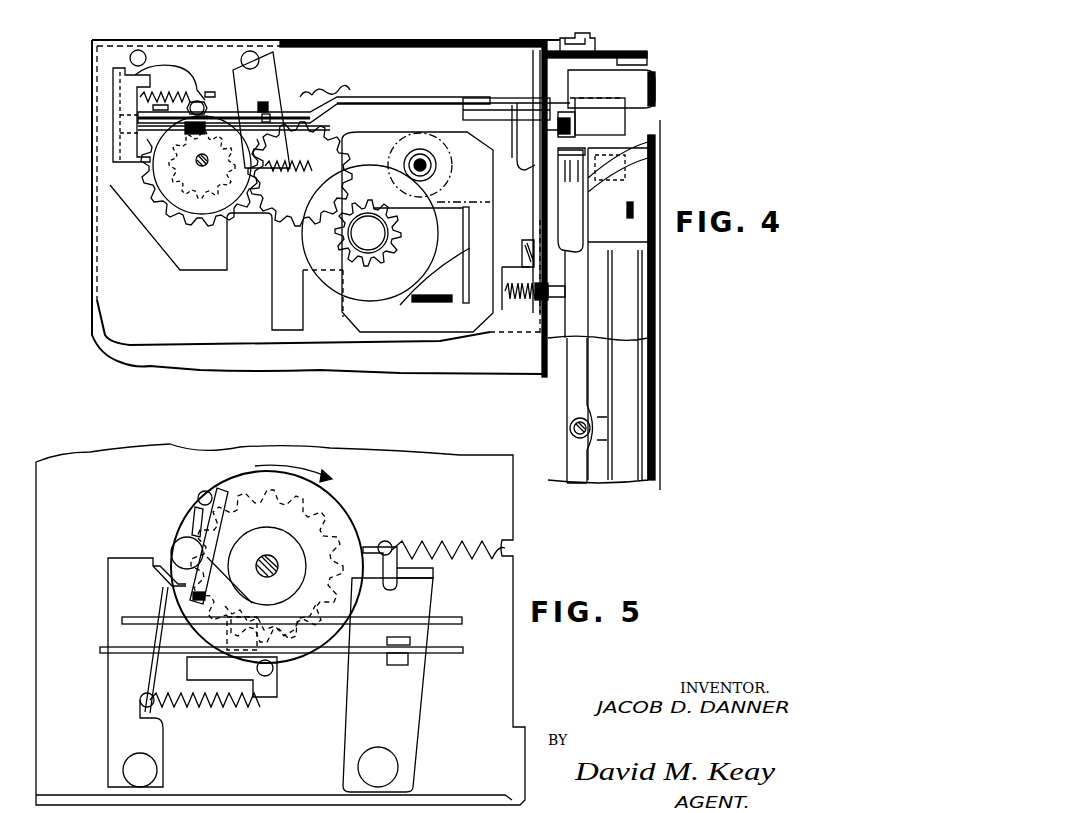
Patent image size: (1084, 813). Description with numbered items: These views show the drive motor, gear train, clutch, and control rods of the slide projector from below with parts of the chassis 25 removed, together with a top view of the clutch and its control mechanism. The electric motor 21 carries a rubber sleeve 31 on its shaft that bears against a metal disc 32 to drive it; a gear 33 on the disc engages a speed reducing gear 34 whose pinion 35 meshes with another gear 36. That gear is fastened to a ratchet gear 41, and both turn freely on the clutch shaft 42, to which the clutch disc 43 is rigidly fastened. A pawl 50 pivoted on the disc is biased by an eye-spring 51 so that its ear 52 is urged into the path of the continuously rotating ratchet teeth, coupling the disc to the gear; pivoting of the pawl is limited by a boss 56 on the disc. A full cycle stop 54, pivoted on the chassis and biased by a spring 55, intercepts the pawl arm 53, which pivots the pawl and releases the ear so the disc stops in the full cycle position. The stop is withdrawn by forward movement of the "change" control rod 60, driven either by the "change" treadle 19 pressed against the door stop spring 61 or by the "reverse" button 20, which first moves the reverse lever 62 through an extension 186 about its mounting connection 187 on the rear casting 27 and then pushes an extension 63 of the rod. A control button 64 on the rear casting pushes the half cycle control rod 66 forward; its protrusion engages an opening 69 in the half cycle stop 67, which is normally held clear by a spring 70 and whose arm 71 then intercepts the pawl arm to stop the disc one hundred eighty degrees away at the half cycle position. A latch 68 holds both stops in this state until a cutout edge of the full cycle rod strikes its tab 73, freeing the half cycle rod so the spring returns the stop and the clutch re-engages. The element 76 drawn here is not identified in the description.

In FIG. 4, the "change" treadle 19 is at (656, 79).
In FIG. 4, the "reverse" button 20 is at (615, 162).
In FIG. 4, the electric motor 21 is at (445, 295).
In FIG. 4, the chassis 25 is at (162, 44).
In FIG. 5, the chassis 25 is at (416, 460).
In FIG. 4, the rear casting 27 is at (618, 51).
In FIG. 4, the rubber sleeve 31 is at (434, 170).
In FIG. 4, the metal disc 32 is at (468, 214).
In FIG. 4, the gear 33 is at (352, 262).
In FIG. 4, the speed reducing gear 34 is at (316, 92).
In FIG. 4, the pinion 35 is at (320, 152).
In FIG. 4, the gear 36 is at (238, 224).
In FIG. 4, the ratchet gear 41 is at (167, 218).
In FIG. 5, the ratchet gear 41 is at (348, 510).
In FIG. 4, the clutch shaft 42 is at (202, 167).
In FIG. 5, the clutch shaft 42 is at (280, 562).
In FIG. 4, the clutch disc 43 is at (160, 190).
In FIG. 5, the clutch disc 43 is at (262, 468).
In FIG. 4, the pawl 50 is at (150, 170).
In FIG. 5, the pawl 50 is at (190, 536).
In FIG. 5, the eye-spring 51 is at (243, 578).
In FIG. 5, the ear 52 is at (196, 506).
In FIG. 5, the arm 53 is at (167, 572).
In FIG. 4, the full cycle stop 54 is at (122, 128).
In FIG. 5, the full cycle stop 54 is at (118, 580).
In FIG. 4, the spring 55 is at (165, 96).
In FIG. 5, the spring 55 is at (210, 708).
In FIG. 5, the boss 56 is at (203, 492).
In FIG. 4, the "change" control rod 60 is at (380, 96).
In FIG. 5, the "change" control rod 60 is at (458, 618).
In FIG. 4, the door stop spring 61 is at (512, 300).
In FIG. 4, the reverse lever 62 is at (583, 250).
In FIG. 4, the extension 63 is at (516, 102).
In FIG. 4, the control button 64 is at (628, 121).
In FIG. 4, the half cycle control rod 66 is at (430, 96).
In FIG. 5, the half cycle control rod 66 is at (334, 654).
In FIG. 4, the half cycle stop 67 is at (268, 80).
In FIG. 5, the half cycle stop 67 is at (420, 718).
In FIG. 4, the latch 68 is at (197, 125).
In FIG. 5, the latch 68 is at (272, 668).
In FIG. 5, the opening 69 is at (415, 660).
In FIG. 4, the spring 70 is at (285, 175).
In FIG. 5, the spring 70 is at (425, 545).
In FIG. 5, the arm 71 is at (436, 574).
In FIG. 5, the tab 73 is at (296, 602).
In FIG. 5, the link rod 76 is at (195, 660).
In FIG. 4, the extension 186 is at (532, 182).
In FIG. 4, the mounting connection 187 is at (570, 425).